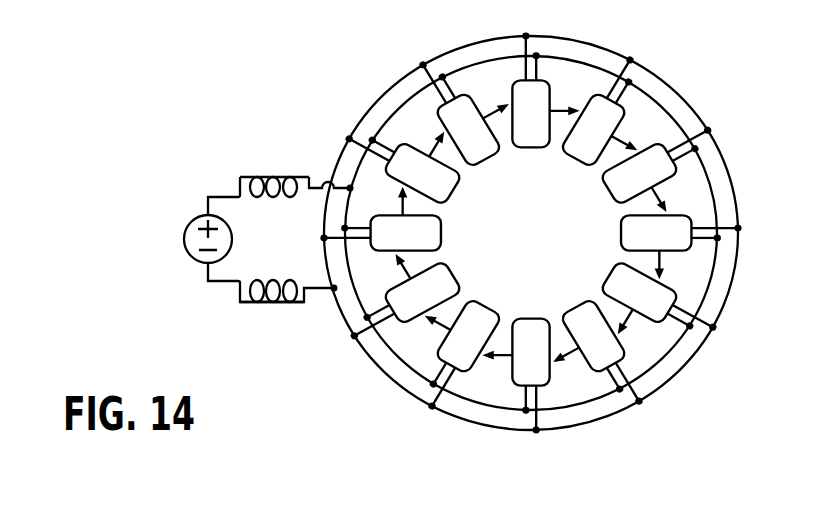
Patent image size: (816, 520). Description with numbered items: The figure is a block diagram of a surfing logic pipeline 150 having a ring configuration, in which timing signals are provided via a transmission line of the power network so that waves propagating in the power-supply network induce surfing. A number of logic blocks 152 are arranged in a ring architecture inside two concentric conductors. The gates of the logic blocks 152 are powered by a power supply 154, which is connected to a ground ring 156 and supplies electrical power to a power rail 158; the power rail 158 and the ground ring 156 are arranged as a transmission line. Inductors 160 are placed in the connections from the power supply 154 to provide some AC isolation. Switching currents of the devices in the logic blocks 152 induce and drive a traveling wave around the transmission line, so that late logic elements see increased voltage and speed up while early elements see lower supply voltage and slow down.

The surfing logic pipeline 150 is at (366, 63).
The logic blocks 152 is at (446, 239).
The power supply 154 is at (188, 224).
The ground ring 156 is at (374, 357).
The power rail 158 is at (416, 373).
The inductors 160 is at (275, 177).